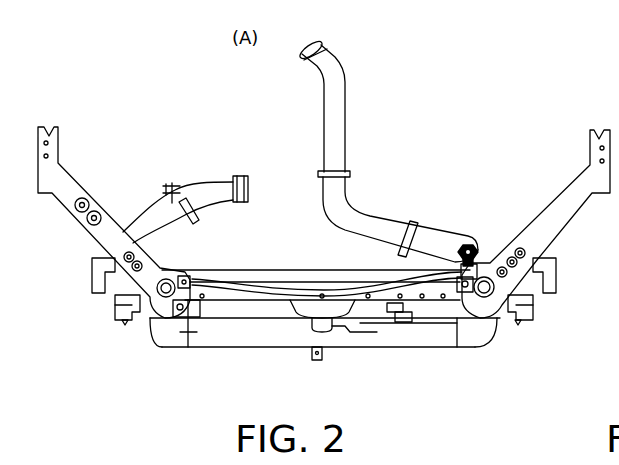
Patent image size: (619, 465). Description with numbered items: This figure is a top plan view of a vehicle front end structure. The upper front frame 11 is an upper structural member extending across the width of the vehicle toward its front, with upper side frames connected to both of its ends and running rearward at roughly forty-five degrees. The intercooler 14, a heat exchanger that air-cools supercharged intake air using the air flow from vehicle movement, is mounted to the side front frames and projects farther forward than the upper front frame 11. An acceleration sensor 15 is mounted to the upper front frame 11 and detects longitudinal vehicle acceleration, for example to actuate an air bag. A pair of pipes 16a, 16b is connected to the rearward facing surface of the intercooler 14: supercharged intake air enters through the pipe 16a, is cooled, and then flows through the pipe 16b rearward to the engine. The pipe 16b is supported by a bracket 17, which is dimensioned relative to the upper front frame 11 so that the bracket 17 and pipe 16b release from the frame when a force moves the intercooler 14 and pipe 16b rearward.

The upper front frame 11 is at (235, 287).
The intercooler 14 is at (243, 340).
The acceleration sensor 15 is at (403, 322).
The pipe 16a is at (122, 280).
The pipe 16b is at (520, 283).
The bracket 17 is at (467, 250).